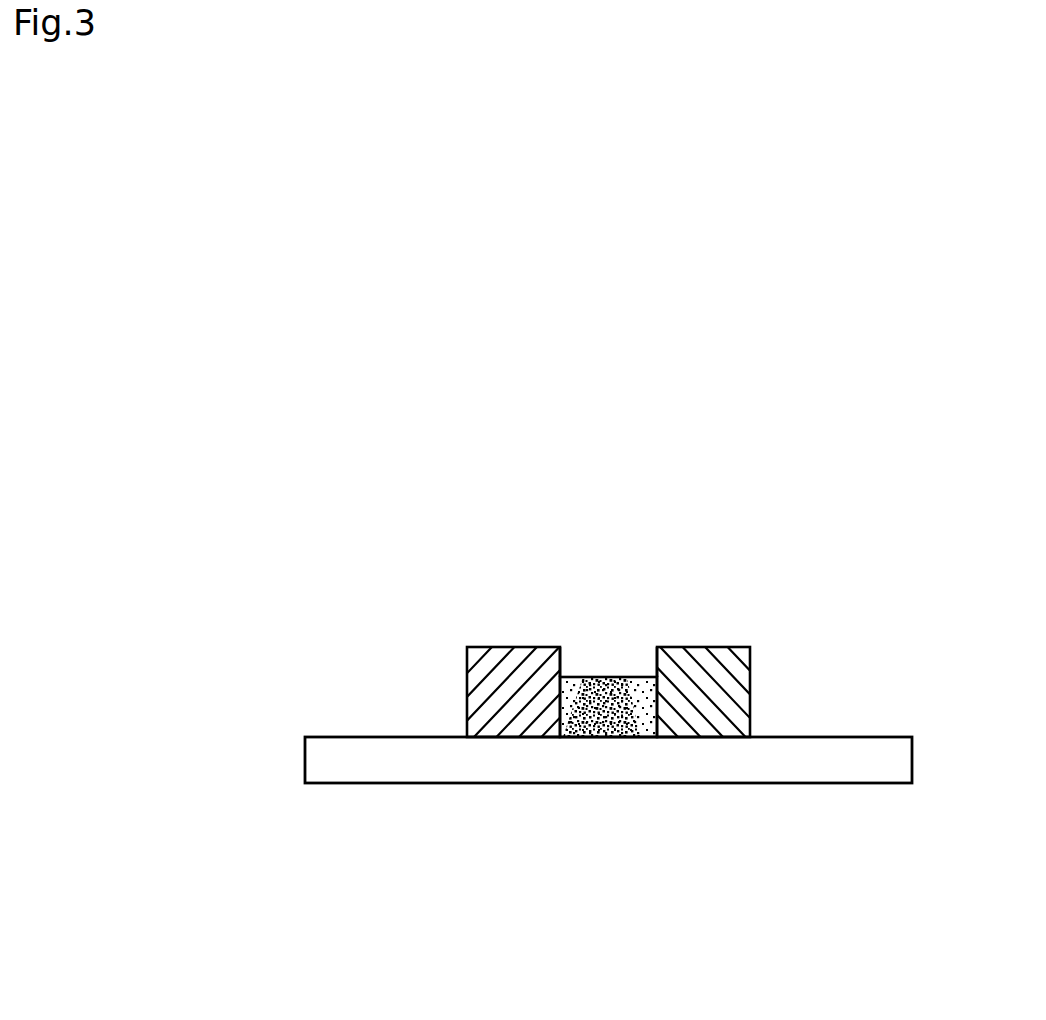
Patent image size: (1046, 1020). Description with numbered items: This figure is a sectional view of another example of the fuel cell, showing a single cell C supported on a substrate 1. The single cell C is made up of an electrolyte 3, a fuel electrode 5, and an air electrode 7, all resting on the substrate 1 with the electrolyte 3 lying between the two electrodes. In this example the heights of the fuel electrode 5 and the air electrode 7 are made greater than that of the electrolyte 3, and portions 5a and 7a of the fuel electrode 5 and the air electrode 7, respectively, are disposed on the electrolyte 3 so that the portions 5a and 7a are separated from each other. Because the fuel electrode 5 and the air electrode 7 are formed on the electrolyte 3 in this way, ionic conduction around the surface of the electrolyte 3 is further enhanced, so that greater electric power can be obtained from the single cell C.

The substrate 1 is at (872, 773).
The electrolyte 3 is at (613, 677).
The fuel electrode 5 is at (470, 675).
The portion of the fuel electrode 5a is at (562, 648).
The air electrode 7 is at (692, 687).
The portion of the air electrode 7a is at (654, 648).
The single cell C is at (588, 510).